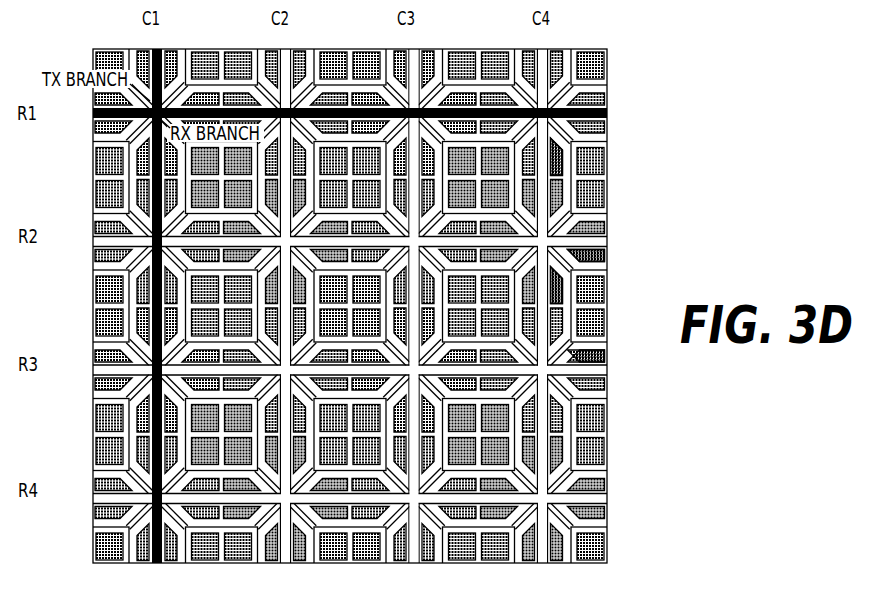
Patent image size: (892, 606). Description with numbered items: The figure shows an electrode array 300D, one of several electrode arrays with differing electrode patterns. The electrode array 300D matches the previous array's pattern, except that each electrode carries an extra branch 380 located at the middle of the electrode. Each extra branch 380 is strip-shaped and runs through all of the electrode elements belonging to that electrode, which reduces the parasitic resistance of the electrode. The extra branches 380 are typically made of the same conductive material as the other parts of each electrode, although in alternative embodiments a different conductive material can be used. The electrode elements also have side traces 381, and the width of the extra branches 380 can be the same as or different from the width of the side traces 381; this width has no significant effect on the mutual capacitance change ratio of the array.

The electrode array 300D is at (579, 27).
The extra branch 380 is at (543, 141).
The side traces 381 is at (568, 313).